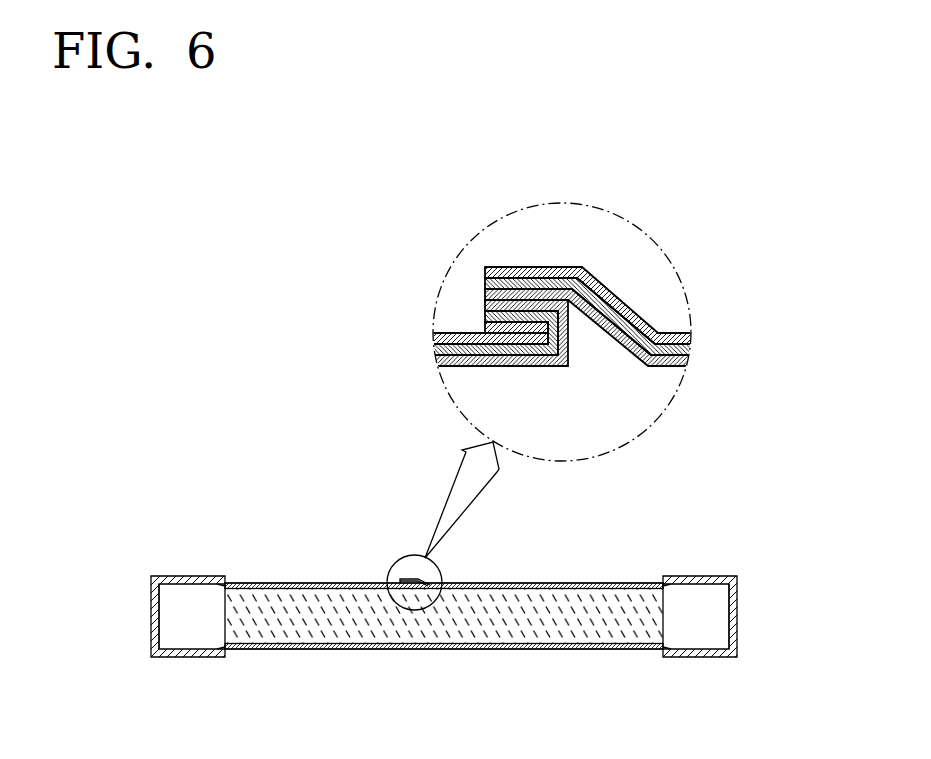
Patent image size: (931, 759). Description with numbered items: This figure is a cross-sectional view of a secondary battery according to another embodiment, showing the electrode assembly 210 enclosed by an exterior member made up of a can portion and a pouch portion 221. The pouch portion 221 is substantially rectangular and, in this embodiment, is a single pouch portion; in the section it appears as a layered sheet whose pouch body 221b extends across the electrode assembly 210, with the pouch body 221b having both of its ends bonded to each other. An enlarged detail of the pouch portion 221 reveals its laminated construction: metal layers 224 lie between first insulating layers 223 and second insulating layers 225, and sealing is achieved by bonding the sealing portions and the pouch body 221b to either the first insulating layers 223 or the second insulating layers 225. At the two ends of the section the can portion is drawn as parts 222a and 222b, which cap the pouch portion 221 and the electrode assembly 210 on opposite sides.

The electrode assembly 210 is at (342, 622).
The pouch portion 221 is at (389, 557).
The pouch body 221b is at (473, 650).
The first housing member 222a is at (151, 617).
The second housing member 222b is at (737, 617).
The first insulating layers 223 is at (598, 312).
The metal layers 224 is at (527, 318).
The second insulating layers 225 is at (485, 322).